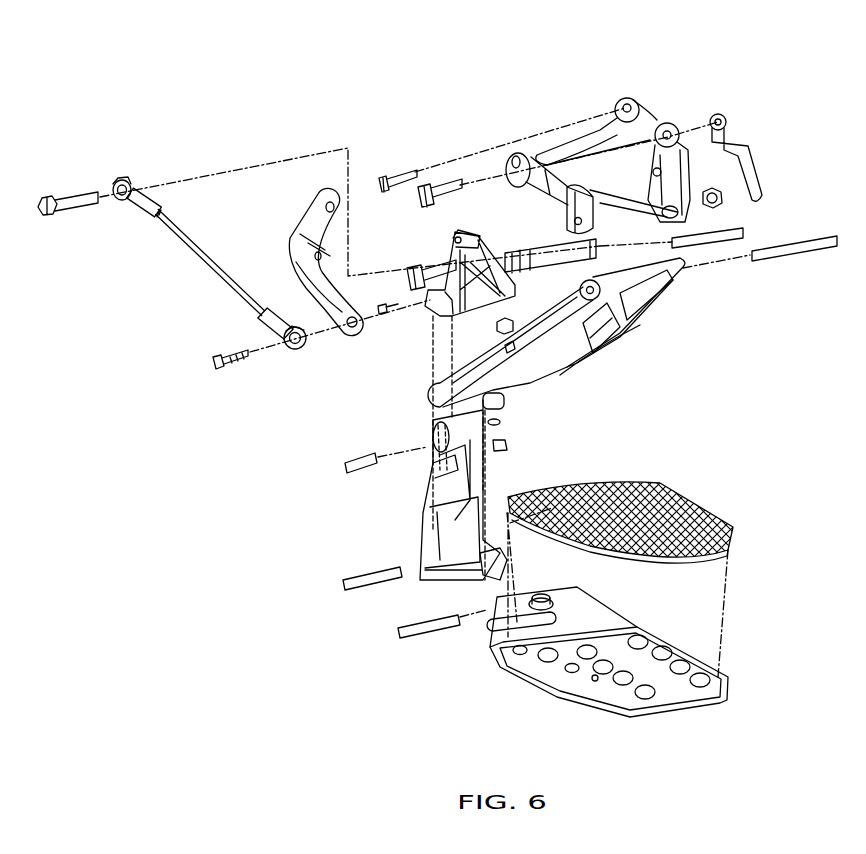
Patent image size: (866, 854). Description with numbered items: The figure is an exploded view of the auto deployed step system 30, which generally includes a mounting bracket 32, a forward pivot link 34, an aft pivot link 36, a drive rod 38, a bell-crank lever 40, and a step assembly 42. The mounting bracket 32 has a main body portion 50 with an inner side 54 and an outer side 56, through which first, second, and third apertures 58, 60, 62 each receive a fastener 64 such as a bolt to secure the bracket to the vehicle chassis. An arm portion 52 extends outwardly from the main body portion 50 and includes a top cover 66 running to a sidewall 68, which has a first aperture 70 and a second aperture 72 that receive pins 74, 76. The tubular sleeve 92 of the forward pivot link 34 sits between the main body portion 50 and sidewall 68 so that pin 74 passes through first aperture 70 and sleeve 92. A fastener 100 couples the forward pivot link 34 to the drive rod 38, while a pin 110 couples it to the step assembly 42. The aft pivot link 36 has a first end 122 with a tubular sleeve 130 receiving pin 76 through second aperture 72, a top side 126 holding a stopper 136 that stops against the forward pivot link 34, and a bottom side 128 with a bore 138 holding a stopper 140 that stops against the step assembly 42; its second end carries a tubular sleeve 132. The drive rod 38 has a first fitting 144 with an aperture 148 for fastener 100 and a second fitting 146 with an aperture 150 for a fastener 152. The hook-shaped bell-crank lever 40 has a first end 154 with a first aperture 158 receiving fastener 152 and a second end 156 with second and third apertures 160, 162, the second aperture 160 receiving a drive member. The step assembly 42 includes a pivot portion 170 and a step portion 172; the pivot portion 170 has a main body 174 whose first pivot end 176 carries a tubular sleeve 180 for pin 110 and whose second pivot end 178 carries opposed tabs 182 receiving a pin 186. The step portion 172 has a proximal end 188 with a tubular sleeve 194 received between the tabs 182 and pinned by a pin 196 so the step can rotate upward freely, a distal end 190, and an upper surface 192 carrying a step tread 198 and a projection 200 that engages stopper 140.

The auto deployed step system 30 is at (160, 122).
The mounting bracket 32 is at (593, 98).
The forward pivot link 34 is at (425, 310).
The aft pivot link 36 is at (625, 337).
The drive rod 38 is at (152, 250).
The bell-crank lever 40 is at (306, 176).
The step assembly 42 is at (395, 688).
The main body portion 50 is at (672, 108).
The arm portion 52 is at (540, 143).
The inner side 54 is at (650, 110).
The outer side 56 is at (665, 214).
The first aperture 58 is at (626, 95).
The second aperture 60 is at (702, 128).
The third aperture 62 is at (692, 205).
The fastener 64 is at (385, 178).
The top cover 66 is at (600, 145).
The sidewall 68 is at (525, 187).
The first aperture 70 is at (505, 165).
The second aperture 72 is at (560, 205).
The pin 74 is at (745, 236).
The pin 76 is at (815, 252).
The sleeve 92 is at (540, 257).
The fastener 100 is at (72, 190).
The pin 110 is at (345, 468).
The first end 122 is at (670, 300).
The top side 126 is at (490, 357).
The bottom side 128 is at (600, 352).
The tubular sleeve 130 is at (678, 283).
The tubular sleeve 132 is at (497, 422).
The stopper 136 is at (513, 320).
The bore 138 is at (510, 396).
The stopper 140 is at (503, 445).
The first fitting 144 is at (148, 183).
The second fitting 146 is at (270, 328).
The aperture 148 is at (120, 183).
The aperture 150 is at (292, 346).
The fastener 152 is at (236, 352).
The first end 154 is at (325, 338).
The second end 156 is at (302, 218).
The first aperture 158 is at (358, 330).
The second aperture 160 is at (330, 198).
The third aperture 162 is at (310, 244).
The pivot portion 170 is at (490, 505).
The step portion 172 is at (578, 705).
The main body 174 is at (455, 490).
The first pivot end 176 is at (432, 468).
The second pivot end 178 is at (425, 578).
The tubular sleeve 180 is at (437, 442).
The tabs 182 is at (445, 590).
The pin 186 is at (382, 570).
The proximal end 188 is at (612, 612).
The distal end 190 is at (612, 727).
The upper surface 192 is at (640, 623).
The tubular sleeve 194 is at (560, 590).
The pin 196 is at (435, 632).
The step tread 198 is at (694, 503).
The projection 200 is at (560, 598).